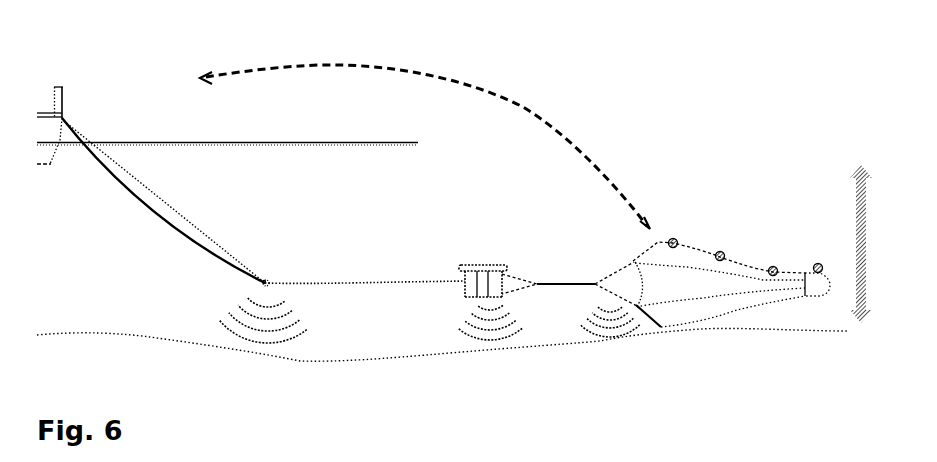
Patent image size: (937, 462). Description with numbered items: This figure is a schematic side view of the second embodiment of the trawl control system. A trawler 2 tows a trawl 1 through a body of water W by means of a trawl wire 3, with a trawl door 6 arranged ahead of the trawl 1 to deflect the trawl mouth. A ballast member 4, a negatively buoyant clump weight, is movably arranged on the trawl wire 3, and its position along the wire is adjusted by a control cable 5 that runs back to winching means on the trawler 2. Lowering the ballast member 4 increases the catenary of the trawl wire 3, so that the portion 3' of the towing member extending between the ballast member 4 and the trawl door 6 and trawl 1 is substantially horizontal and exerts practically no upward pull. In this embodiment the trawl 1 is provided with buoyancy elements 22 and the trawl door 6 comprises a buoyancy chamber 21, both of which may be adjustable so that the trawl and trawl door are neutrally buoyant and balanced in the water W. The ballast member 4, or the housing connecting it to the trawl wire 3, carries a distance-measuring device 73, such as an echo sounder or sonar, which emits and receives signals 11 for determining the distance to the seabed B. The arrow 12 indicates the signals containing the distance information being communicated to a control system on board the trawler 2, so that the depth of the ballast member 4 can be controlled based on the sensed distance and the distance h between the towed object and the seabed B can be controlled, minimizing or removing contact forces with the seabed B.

The trawl 1 is at (733, 225).
The trawler 2 is at (96, 97).
The trawl wire 3 is at (163, 200).
The portion of the towing member 3' is at (365, 238).
The ballast member 4 is at (314, 259).
The control cable 5 is at (166, 197).
The trawl door 6 is at (494, 239).
The signals 11 is at (477, 360).
The arrow 12 is at (425, 143).
The buoyancy chamber 21 is at (450, 238).
The buoyancy elements 22 is at (797, 173).
The distance-measuring device 73 is at (210, 281).
The seabed B is at (442, 323).
The body of water W is at (66, 245).
The distance to the seabed h is at (705, 348).